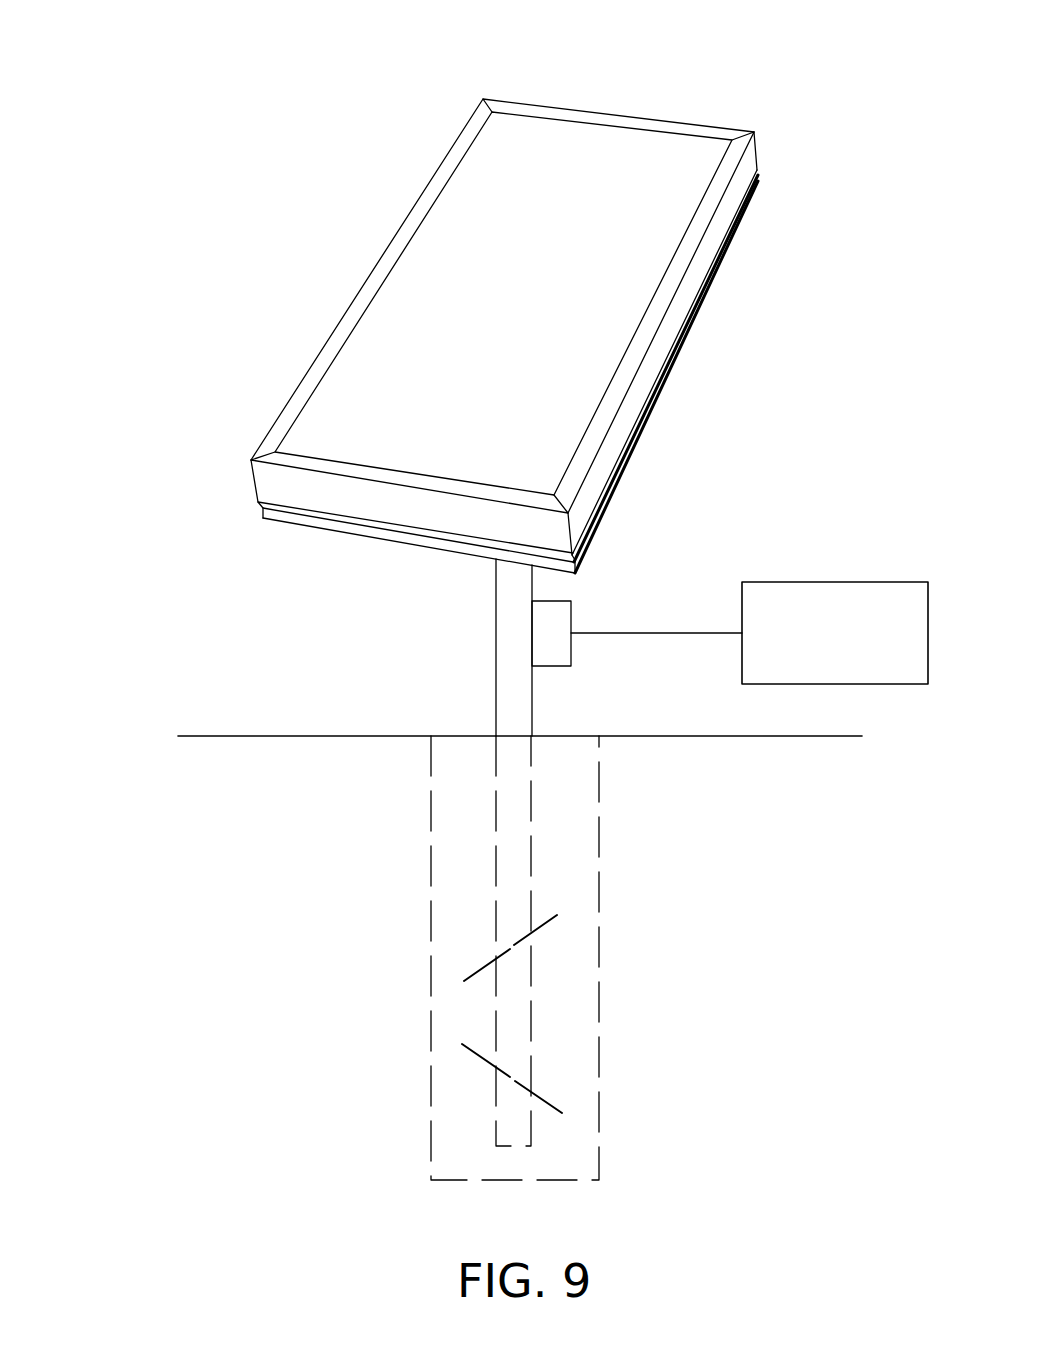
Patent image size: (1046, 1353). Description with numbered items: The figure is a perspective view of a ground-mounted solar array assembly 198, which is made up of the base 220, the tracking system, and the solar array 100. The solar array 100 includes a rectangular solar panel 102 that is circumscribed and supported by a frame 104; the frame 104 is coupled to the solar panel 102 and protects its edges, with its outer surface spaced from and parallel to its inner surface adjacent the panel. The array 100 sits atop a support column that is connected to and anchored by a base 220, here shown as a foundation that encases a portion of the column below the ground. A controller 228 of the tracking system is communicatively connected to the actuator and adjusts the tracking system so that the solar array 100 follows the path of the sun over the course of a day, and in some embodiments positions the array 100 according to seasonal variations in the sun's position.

The solar array 100 is at (426, 78).
The solar panel 102 is at (653, 146).
The frame 104 is at (718, 283).
The solar array assembly 198 is at (196, 414).
The base 220 is at (430, 923).
The controller 228 is at (802, 649).